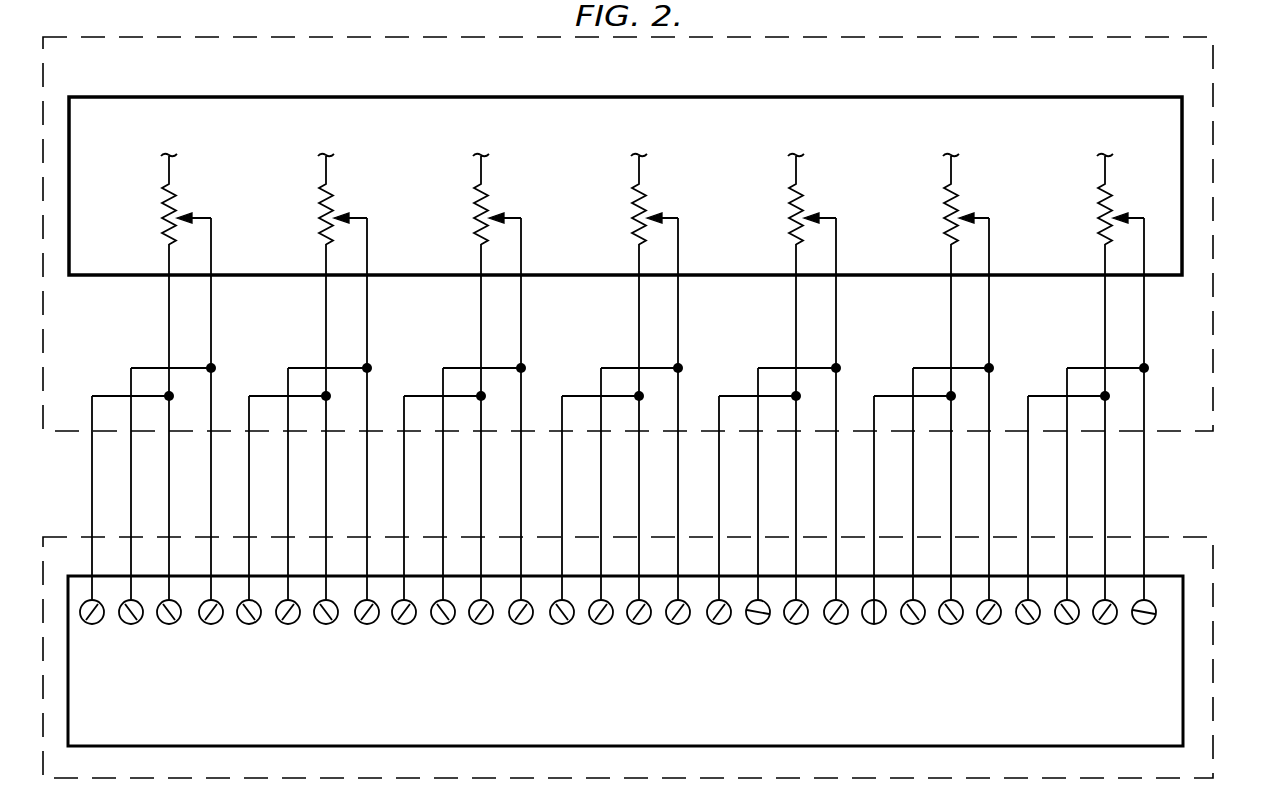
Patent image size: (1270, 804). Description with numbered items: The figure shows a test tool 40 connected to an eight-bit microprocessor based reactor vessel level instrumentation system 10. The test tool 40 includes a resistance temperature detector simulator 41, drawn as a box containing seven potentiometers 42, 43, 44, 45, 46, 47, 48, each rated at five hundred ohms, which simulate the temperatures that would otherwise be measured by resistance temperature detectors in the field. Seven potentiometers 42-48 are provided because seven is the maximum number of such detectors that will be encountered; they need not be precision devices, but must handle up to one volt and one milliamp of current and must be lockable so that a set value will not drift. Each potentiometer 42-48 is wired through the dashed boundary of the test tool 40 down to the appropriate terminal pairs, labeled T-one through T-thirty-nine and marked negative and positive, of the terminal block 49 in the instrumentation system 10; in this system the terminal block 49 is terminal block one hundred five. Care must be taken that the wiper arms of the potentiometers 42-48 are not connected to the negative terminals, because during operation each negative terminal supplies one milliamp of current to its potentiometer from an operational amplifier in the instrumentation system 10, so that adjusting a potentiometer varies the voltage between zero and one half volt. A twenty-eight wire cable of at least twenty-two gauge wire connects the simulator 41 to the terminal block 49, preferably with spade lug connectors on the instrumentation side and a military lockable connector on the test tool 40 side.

The reactor vessel level instrumentation system 10 is at (1208, 572).
The test tool 40 is at (1213, 318).
The resistance temperature detector simulator 41 is at (1059, 100).
The potentiometer 42 is at (178, 193).
The potentiometer 43 is at (335, 193).
The potentiometer 44 is at (490, 193).
The potentiometer 45 is at (648, 193).
The potentiometer 46 is at (805, 193).
The potentiometer 47 is at (960, 193).
The potentiometer 48 is at (1114, 193).
The terminal block 49 is at (877, 728).